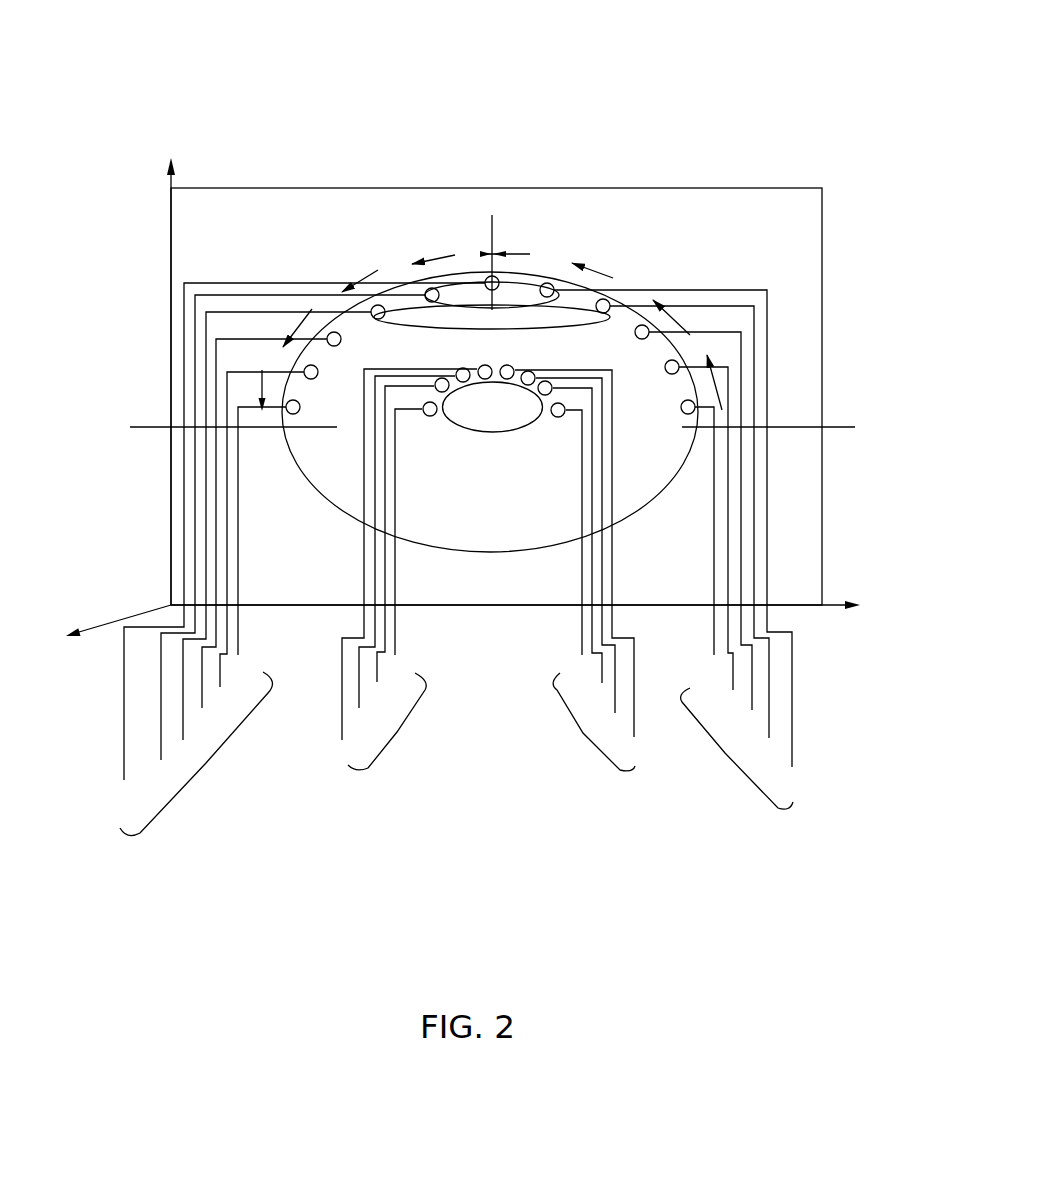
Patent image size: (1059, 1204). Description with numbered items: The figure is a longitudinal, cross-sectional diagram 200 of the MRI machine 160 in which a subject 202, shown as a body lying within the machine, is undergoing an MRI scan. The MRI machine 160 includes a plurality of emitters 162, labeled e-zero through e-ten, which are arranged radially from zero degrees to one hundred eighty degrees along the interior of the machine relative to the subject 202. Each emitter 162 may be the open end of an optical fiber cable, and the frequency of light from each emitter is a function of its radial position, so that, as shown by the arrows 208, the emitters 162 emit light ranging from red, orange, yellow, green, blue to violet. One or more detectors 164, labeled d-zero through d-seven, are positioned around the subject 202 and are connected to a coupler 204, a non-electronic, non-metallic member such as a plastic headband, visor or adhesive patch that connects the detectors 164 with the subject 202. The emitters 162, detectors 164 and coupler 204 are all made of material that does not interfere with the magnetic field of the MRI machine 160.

The longitudinal, cross-sectional diagram 200 is at (809, 46).
The MRI machine 160 is at (496, 377).
The arrows 208 is at (445, 256).
The subject 202 is at (497, 420).
The coupler 204 is at (467, 432).
The emitters 162 is at (206, 763).
The detectors 164 is at (397, 732).